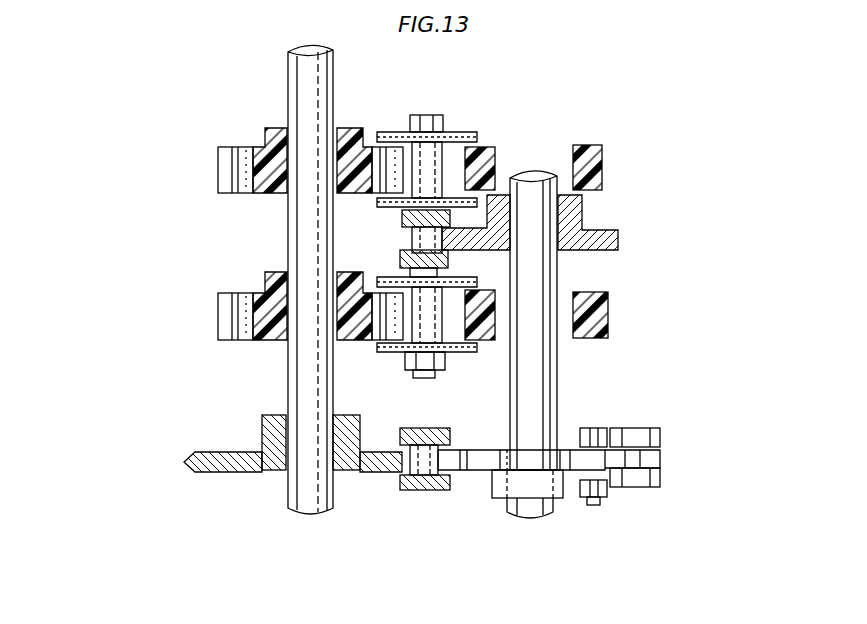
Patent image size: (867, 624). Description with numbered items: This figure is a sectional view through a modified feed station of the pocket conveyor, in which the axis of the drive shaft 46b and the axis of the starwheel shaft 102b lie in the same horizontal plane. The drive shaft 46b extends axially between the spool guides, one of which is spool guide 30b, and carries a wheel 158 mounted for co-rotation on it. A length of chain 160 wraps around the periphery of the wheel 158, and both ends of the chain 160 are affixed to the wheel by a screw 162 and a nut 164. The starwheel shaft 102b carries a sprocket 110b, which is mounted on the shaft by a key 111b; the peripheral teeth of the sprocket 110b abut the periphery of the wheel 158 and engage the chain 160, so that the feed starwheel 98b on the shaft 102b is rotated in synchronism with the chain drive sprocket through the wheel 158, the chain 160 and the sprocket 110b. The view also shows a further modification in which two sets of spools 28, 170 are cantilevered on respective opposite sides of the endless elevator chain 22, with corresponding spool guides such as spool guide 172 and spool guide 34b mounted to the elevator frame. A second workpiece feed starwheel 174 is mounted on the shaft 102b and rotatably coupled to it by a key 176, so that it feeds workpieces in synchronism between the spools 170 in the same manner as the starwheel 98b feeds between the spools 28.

The second workpiece feed starwheel 174 is at (253, 143).
The key 176 is at (338, 150).
The spools 170 is at (460, 130).
The spool guide 172 is at (605, 159).
The endless chain 22 is at (402, 222).
The spool guide 30b is at (606, 309).
The starwheel 98b is at (232, 325).
The starwheel shaft 102b is at (287, 398).
The spools 28 is at (395, 354).
The spool guide 34b is at (482, 345).
The drive shaft 46b is at (548, 390).
The chain 160 is at (426, 428).
The screw 162 is at (597, 428).
The nut 164 is at (604, 495).
The wheel 158 is at (570, 495).
The sprocket 110b is at (248, 466).
The key 111b is at (338, 470).